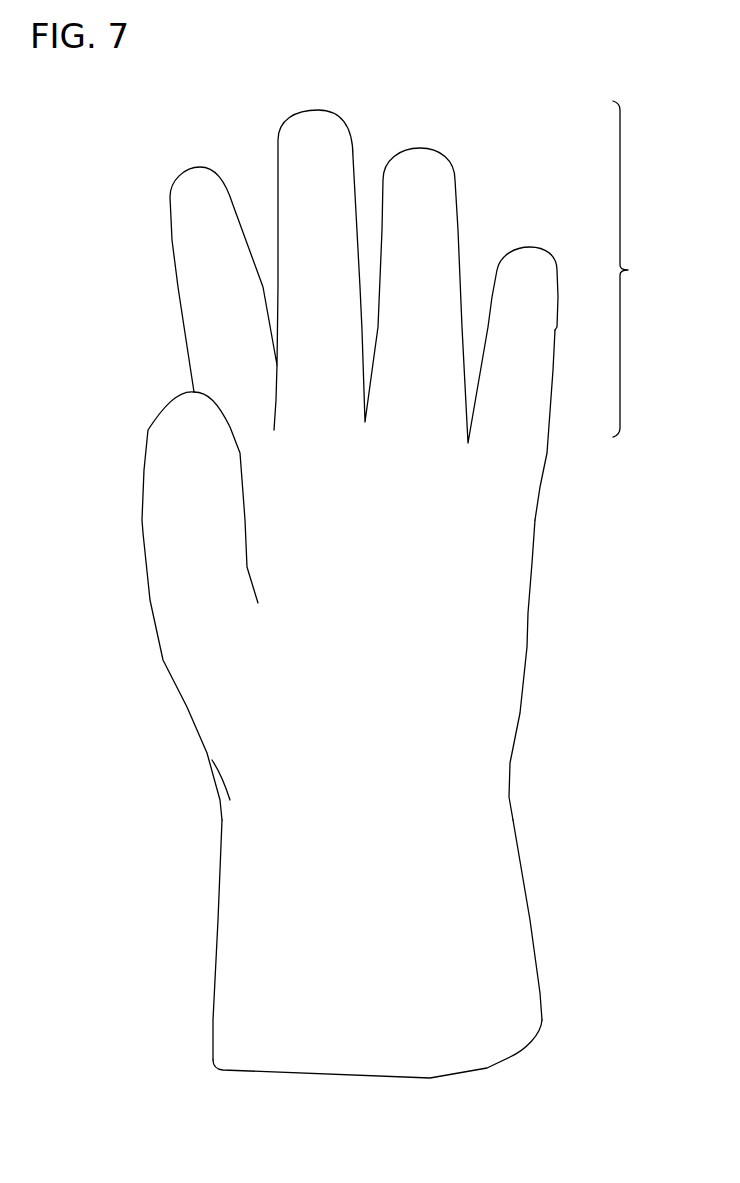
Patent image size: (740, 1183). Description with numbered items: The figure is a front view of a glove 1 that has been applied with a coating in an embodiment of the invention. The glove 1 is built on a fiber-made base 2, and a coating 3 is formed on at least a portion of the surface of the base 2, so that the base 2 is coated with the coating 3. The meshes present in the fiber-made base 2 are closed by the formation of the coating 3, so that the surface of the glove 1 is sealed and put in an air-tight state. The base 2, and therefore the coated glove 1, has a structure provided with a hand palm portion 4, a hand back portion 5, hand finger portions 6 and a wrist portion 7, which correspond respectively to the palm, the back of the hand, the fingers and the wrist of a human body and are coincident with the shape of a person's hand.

The glove 1 is at (374, 624).
The fiber-made base 2 is at (512, 1057).
The coating 3 is at (510, 555).
The hand palm portion 4 is at (235, 688).
The hand back portion 5 is at (545, 460).
The hand finger portions 6 is at (411, 272).
The wrist portion 7 is at (513, 1002).